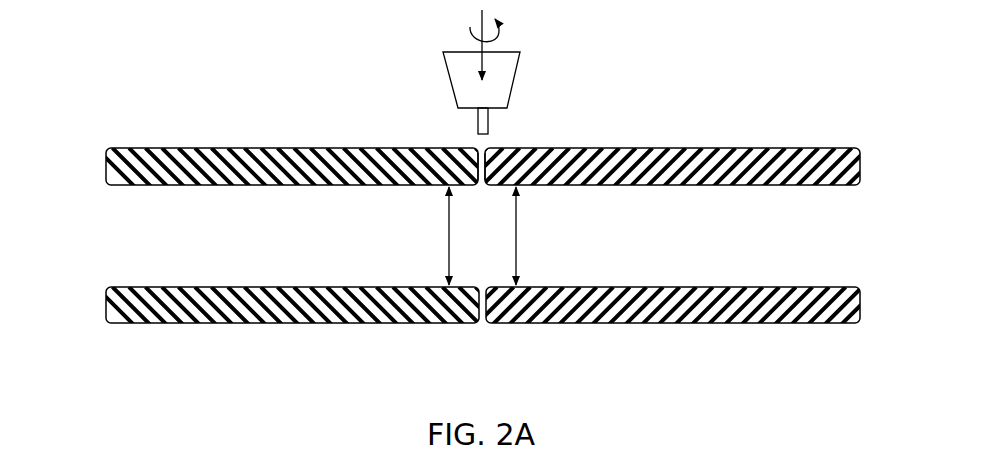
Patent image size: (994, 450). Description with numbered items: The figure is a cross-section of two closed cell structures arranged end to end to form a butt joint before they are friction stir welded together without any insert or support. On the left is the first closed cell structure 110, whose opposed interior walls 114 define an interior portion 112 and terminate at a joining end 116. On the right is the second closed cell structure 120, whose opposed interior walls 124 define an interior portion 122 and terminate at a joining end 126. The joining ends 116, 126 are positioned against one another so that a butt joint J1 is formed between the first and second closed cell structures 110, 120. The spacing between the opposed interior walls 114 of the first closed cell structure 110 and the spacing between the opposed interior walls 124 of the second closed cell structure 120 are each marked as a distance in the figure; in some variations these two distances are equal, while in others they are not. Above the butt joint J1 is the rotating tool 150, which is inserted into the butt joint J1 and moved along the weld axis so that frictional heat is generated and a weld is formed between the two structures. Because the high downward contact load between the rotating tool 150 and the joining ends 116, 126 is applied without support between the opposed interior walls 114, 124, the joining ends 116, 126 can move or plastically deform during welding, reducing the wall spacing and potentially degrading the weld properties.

The first closed cell structure 110 is at (265, 128).
The interior portion 112 is at (164, 232).
The opposed interior walls 114 is at (193, 148).
The joining end 116 is at (460, 146).
The second closed cell structure 120 is at (710, 132).
The interior portion 122 is at (834, 231).
The opposed interior walls 124 is at (778, 148).
The joining end 126 is at (512, 146).
The rotating tool 150 is at (546, 44).
The butt joint J1 is at (486, 333).